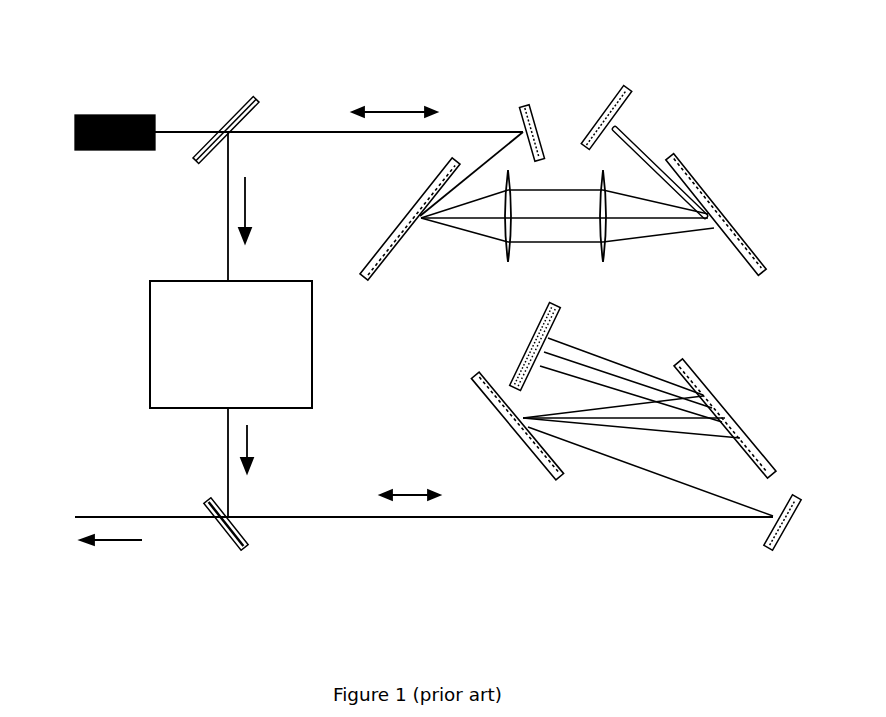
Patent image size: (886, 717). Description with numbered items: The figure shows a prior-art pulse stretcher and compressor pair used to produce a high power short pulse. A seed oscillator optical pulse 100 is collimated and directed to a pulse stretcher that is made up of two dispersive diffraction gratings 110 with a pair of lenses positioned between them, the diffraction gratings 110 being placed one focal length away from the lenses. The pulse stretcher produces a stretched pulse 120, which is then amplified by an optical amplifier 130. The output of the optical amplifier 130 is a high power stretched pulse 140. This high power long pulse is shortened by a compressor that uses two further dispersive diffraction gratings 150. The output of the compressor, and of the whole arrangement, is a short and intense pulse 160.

The seed oscillator optical pulse 100 is at (112, 114).
The dispersive diffraction gratings 110 is at (365, 266).
The stretched pulse 120 is at (245, 210).
The optical amplifier 130 is at (150, 349).
The high power stretched pulse 140 is at (255, 462).
The dispersive diffraction gratings 150 is at (522, 437).
The short and intense pulse 160 is at (103, 528).